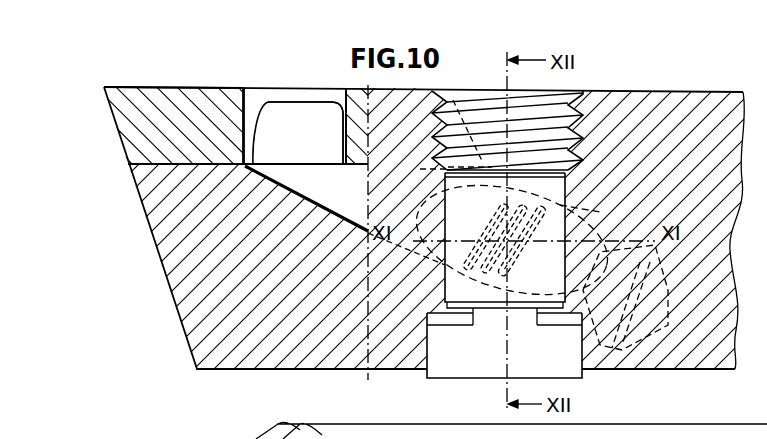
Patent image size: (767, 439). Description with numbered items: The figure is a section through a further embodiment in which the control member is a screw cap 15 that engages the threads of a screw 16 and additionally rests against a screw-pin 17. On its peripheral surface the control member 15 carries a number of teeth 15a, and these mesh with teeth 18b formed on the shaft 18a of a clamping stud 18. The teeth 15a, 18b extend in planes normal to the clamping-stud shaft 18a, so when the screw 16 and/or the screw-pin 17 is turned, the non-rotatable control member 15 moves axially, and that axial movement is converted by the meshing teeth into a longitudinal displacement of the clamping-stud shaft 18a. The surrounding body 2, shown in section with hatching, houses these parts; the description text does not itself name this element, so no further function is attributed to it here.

The clamping plate 2 is at (182, 105).
The clamping stud 18 is at (303, 176).
The shaft 18a is at (332, 190).
The teeth 18b is at (445, 283).
The screw-pin 17 is at (543, 112).
The screw cap 15 is at (505, 200).
The teeth 15a is at (568, 208).
The screw 16 is at (464, 360).